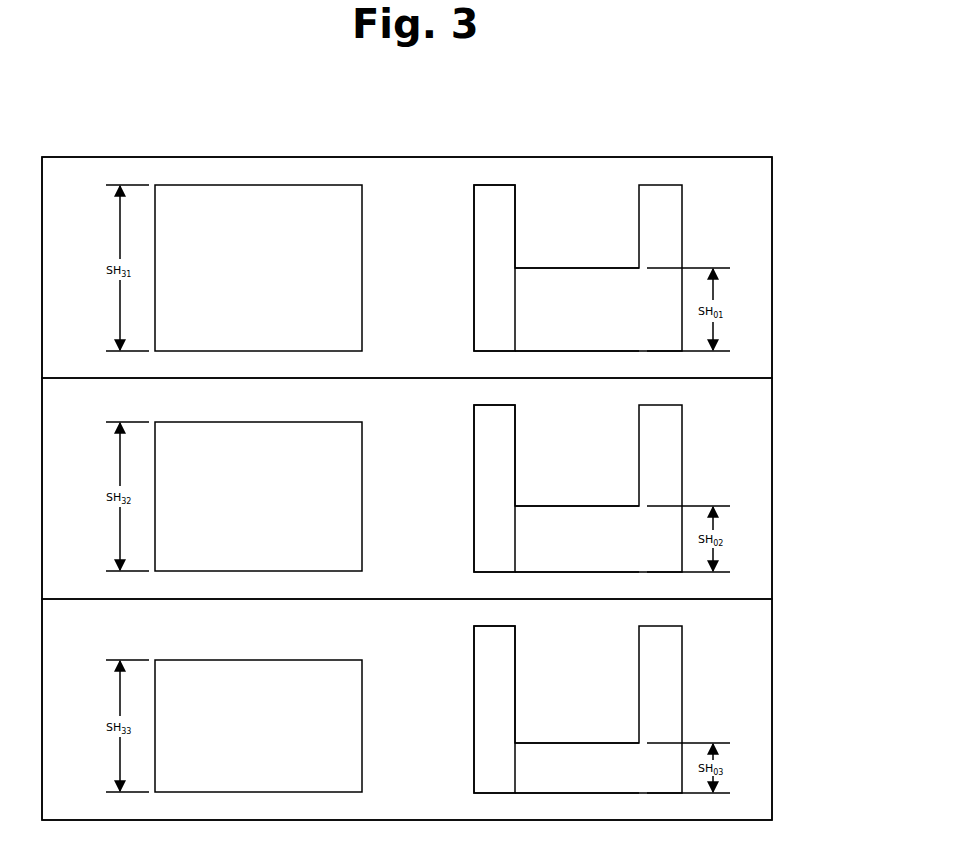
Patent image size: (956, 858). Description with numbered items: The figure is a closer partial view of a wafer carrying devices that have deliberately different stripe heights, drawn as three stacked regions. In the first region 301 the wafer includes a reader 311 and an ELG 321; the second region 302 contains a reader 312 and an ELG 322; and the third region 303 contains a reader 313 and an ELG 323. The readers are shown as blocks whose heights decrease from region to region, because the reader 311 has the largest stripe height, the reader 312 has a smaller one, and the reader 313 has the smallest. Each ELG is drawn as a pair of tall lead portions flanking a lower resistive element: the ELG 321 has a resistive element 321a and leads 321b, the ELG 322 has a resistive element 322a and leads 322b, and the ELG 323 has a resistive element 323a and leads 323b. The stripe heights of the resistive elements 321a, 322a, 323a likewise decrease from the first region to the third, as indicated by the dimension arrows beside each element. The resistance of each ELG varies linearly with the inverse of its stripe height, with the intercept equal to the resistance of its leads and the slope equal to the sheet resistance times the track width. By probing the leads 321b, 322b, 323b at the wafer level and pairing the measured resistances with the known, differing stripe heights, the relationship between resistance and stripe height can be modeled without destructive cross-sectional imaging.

The first region 301 is at (772, 175).
The second region 302 is at (772, 394).
The third region 303 is at (772, 616).
The reader 311 is at (258, 268).
The reader 312 is at (258, 496).
The reader 313 is at (258, 726).
The ELG 321 is at (467, 193).
The resistive element 321a is at (577, 309).
The leads 321b is at (474, 240).
The ELG 322 is at (463, 423).
The resistive element 322a is at (577, 539).
The leads 322b is at (474, 472).
The ELG 323 is at (463, 645).
The resistive element 323a is at (577, 768).
The leads 323b is at (474, 690).